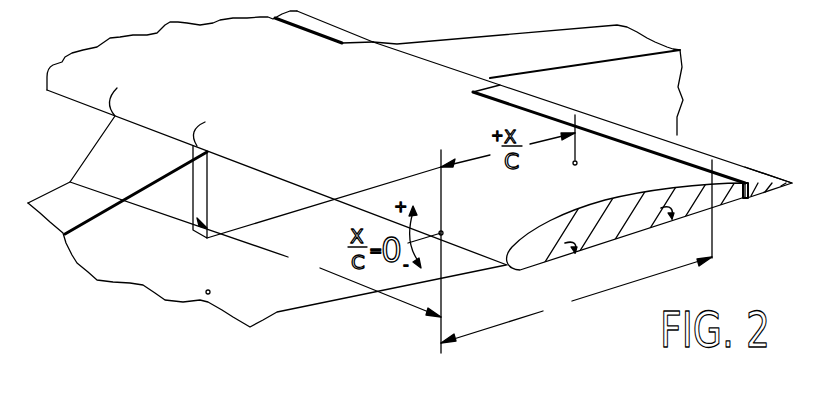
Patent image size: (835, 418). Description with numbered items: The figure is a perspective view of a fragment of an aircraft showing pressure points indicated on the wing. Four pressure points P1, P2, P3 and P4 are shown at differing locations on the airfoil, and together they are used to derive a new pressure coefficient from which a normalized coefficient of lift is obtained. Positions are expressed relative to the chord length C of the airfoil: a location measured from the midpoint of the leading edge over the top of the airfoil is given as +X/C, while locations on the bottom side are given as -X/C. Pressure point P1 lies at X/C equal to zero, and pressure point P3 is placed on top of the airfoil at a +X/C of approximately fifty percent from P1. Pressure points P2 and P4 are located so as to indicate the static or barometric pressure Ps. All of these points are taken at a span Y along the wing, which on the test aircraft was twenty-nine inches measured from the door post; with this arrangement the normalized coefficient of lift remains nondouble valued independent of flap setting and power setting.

The pressure point P1 is at (439, 223).
The pressure point P2 is at (579, 266).
The pressure point P3 is at (590, 153).
The pressure point P4 is at (666, 233).
The static or barometric pressure Ps is at (206, 296).
The span Y is at (255, 249).
The chord length C is at (576, 300).